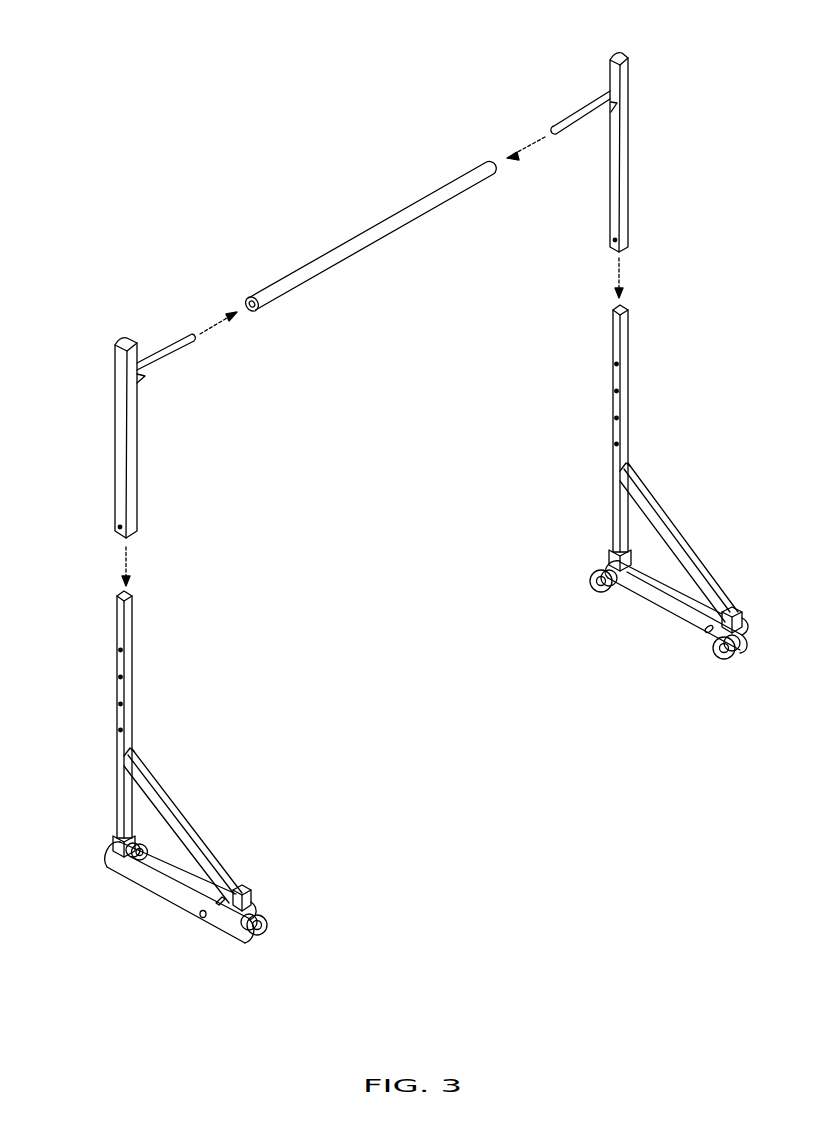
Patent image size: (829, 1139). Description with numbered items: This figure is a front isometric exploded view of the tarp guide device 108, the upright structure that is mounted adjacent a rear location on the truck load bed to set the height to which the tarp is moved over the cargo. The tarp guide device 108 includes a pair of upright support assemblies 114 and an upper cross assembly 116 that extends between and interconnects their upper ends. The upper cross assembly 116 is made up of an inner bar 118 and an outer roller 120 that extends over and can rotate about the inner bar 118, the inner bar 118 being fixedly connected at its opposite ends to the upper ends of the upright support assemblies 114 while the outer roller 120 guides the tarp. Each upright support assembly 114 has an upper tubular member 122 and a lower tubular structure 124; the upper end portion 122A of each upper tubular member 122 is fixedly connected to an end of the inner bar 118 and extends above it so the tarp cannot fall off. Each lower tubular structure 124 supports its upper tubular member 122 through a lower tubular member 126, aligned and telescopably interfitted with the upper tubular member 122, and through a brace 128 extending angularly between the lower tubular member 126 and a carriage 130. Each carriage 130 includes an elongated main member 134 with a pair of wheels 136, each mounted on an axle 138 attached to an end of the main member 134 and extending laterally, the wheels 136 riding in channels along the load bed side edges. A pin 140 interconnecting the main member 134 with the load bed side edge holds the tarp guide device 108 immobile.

The tarp guide device 108 is at (206, 175).
The upright support assembly 114 is at (404, 510).
The upper cross assembly 116 is at (357, 225).
The inner bar 118 is at (230, 340).
The outer roller 120 is at (290, 272).
The upper tubular member 122 is at (377, 284).
The upper end portion 122A is at (115, 355).
The lower tubular structure 124 is at (427, 722).
The lower tubular member 126 is at (133, 692).
The brace 128 is at (170, 793).
The carriage 130 is at (407, 760).
The elongated main member 134 is at (124, 878).
The wheel 136 is at (457, 755).
The axle 138 is at (262, 933).
The pin 140 is at (200, 920).